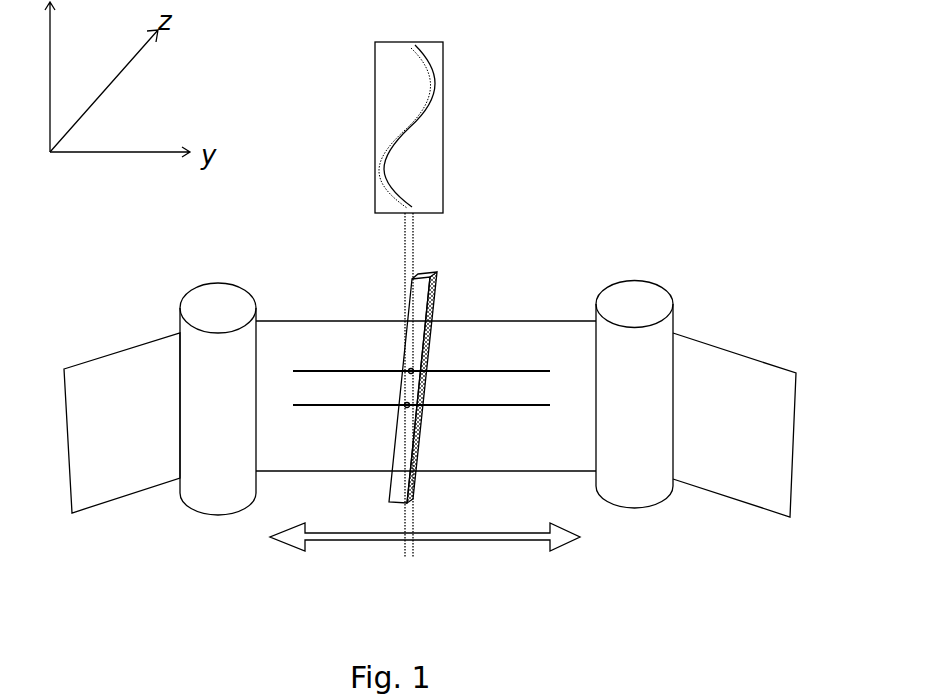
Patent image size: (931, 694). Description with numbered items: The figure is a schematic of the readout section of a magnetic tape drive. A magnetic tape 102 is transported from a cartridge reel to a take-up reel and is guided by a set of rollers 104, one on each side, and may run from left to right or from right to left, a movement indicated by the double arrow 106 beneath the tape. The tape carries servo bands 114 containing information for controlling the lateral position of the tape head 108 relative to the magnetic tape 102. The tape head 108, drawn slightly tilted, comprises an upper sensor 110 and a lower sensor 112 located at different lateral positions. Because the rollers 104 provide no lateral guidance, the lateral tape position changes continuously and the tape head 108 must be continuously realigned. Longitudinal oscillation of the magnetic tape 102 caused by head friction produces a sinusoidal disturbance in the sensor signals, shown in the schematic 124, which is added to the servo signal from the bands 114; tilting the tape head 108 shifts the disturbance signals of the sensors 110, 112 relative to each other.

The magnetic tape 102 is at (720, 385).
The rollers 104 is at (219, 310).
The direction of movement arrow 106 is at (465, 537).
The tape head 108 is at (422, 285).
The upper sensor 110 is at (408, 371).
The lower sensor 112 is at (418, 406).
The servo bands 114 is at (510, 371).
The schematic 124 is at (479, 112).